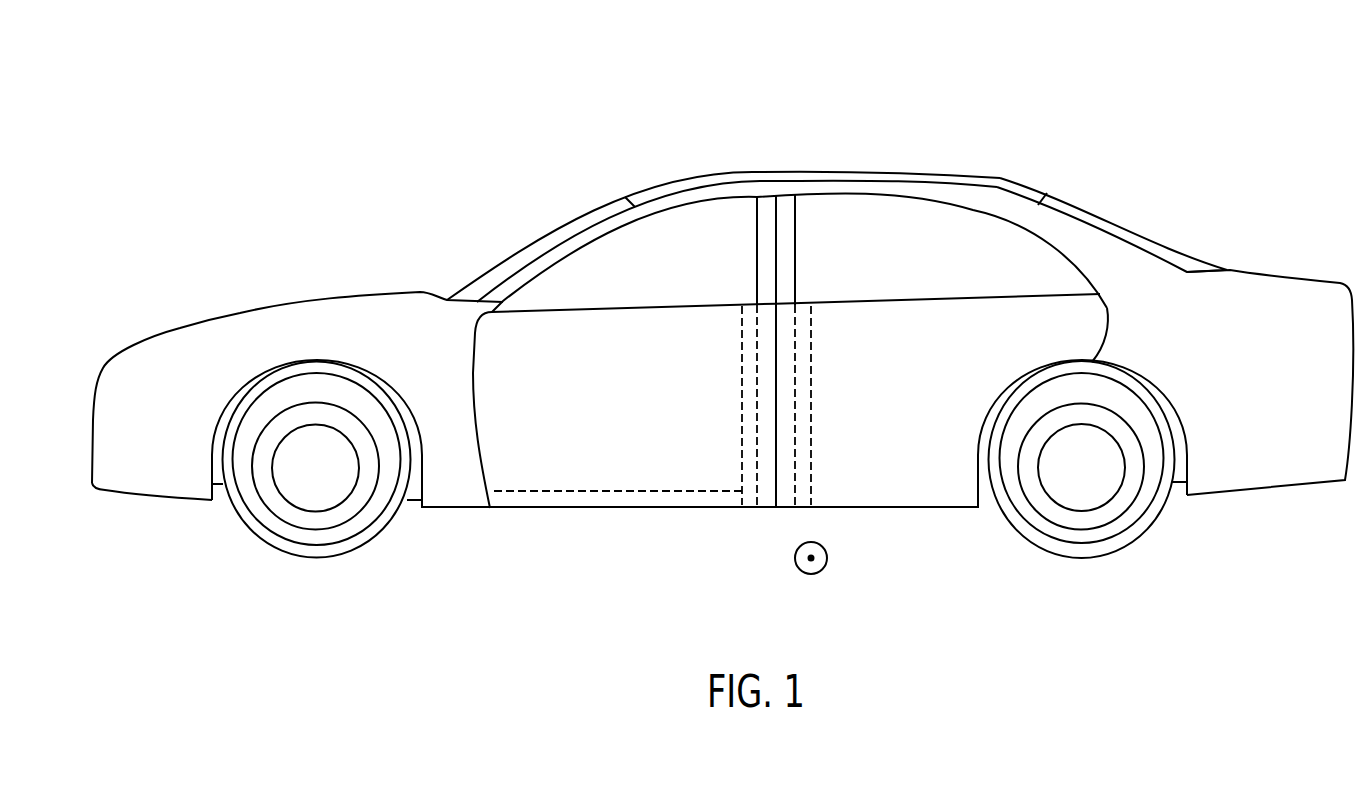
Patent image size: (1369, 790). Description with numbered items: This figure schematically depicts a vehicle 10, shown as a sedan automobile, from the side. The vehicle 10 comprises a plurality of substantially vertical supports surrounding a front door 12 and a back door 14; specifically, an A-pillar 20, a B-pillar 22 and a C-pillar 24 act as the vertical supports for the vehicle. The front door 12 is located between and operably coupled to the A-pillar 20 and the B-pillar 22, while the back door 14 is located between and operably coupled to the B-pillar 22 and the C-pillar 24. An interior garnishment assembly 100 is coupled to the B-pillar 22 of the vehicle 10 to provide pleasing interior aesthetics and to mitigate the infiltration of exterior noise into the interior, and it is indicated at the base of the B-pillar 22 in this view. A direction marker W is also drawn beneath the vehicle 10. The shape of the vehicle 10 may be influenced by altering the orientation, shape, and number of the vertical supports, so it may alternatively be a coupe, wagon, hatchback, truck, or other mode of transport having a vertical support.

The vehicle 10 is at (283, 145).
The front door 12 is at (651, 313).
The back door 14 is at (917, 313).
The A-pillar 20 is at (610, 178).
The B-pillar 22 is at (772, 150).
The C-pillar 24 is at (1027, 165).
The interior garnishment assembly 100 is at (740, 488).
The vehicle width direction W is at (827, 558).